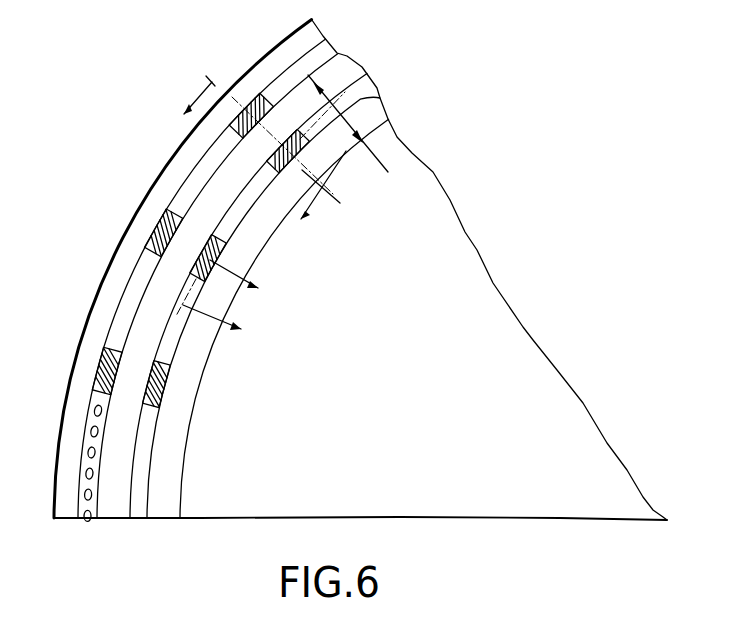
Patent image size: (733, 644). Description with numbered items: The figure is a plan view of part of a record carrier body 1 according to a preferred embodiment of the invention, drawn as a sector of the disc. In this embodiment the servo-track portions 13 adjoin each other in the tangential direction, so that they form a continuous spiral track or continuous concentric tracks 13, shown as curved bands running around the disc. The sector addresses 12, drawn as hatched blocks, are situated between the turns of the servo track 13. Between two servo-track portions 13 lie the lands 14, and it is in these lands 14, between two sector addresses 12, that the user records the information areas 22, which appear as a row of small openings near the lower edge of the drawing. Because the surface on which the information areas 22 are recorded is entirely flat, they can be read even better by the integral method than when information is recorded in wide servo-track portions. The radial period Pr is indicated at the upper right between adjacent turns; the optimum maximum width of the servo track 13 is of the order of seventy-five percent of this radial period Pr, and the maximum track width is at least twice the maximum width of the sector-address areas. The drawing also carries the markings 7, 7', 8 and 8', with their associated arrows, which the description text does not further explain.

The record carrier body 1 is at (463, 255).
The viewing direction arrow for FIG. 7 is at (193, 102).
The viewing direction arrow for FIG. 7' is at (323, 191).
The viewing direction arrow for FIG. 8 is at (243, 283).
The viewing direction arrow for FIG. 8' is at (219, 314).
The sector addresses 12 is at (228, 130).
The servo-track portions 13 is at (115, 508).
The lands 14 is at (138, 508).
The information areas 22 is at (85, 472).
The radial period Pr is at (373, 98).